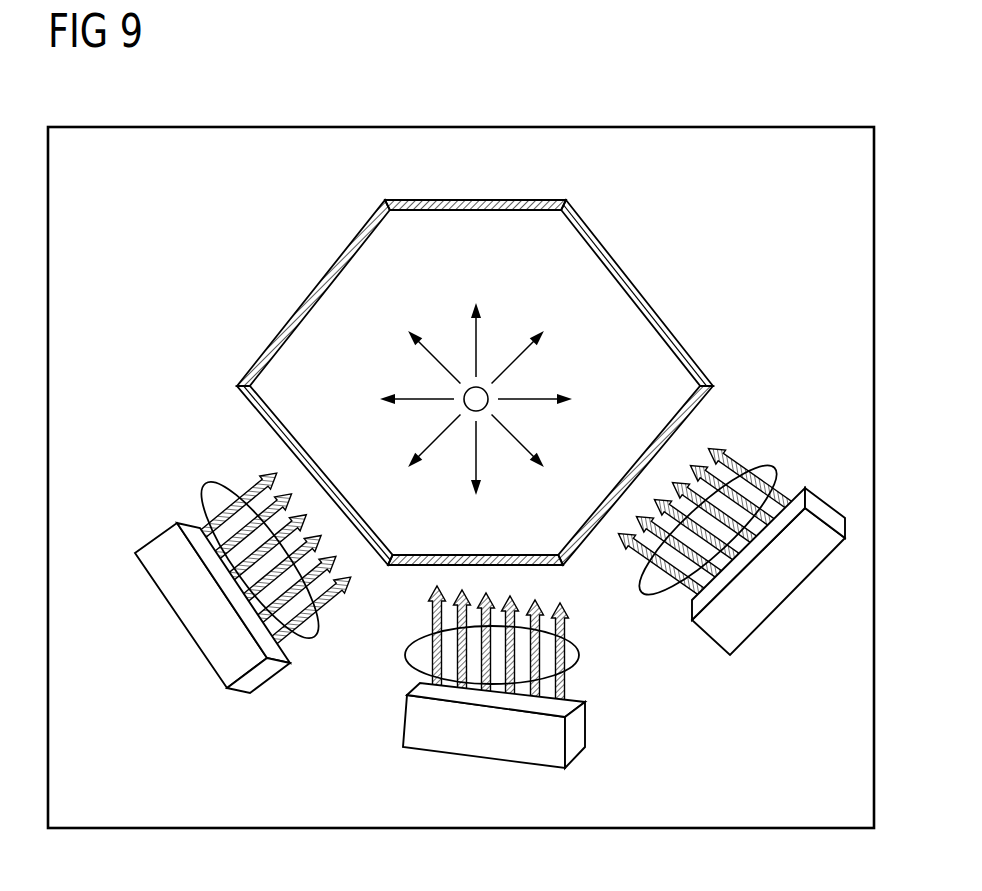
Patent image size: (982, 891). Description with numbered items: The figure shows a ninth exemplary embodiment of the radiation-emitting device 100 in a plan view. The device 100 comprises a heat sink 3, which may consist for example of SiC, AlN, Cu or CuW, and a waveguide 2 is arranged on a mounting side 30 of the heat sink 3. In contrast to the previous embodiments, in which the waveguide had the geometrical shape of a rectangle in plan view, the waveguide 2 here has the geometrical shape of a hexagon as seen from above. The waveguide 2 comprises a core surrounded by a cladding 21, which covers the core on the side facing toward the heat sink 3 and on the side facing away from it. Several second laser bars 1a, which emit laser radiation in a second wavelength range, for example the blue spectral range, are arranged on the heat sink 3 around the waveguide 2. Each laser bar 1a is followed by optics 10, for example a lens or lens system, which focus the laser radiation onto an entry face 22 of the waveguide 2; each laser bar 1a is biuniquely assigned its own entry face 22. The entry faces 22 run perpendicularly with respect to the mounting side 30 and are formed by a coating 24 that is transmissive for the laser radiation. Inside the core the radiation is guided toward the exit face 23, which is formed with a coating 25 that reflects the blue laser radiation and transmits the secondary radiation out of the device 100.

The radiation-emitting device 100 is at (770, 93).
The second laser bar 1a is at (185, 617).
The optics 10 is at (405, 655).
The waveguide 2 is at (252, 366).
The cladding 21 is at (639, 293).
The entry face 22 is at (252, 415).
The exit face 23 is at (428, 193).
The coating 24 is at (673, 278).
The coating 25 is at (497, 198).
The heat sink 3 is at (672, 818).
The mounting side 30 is at (822, 808).